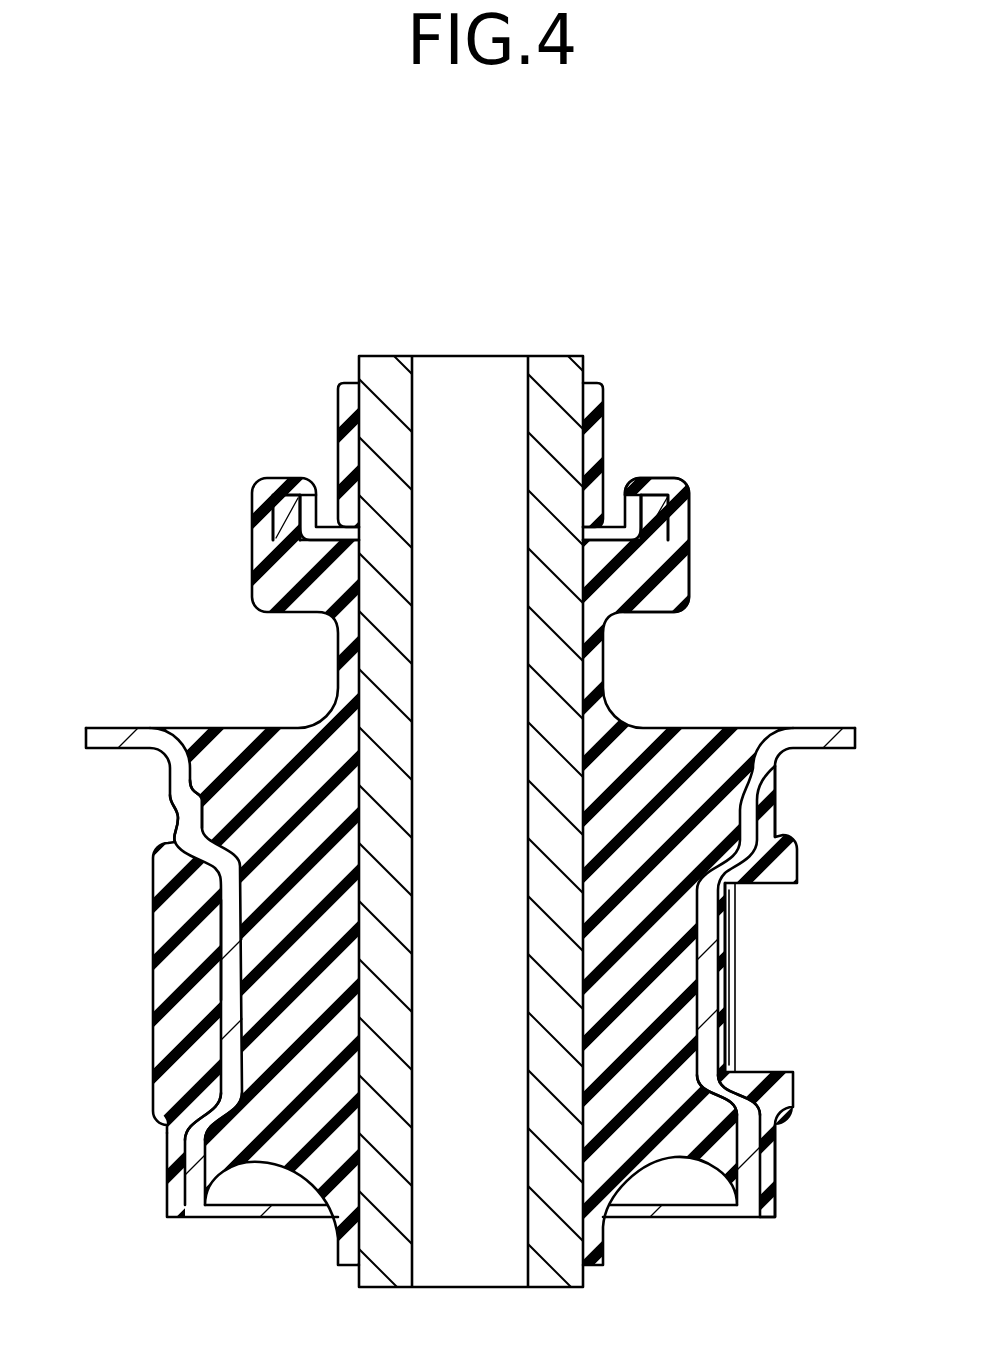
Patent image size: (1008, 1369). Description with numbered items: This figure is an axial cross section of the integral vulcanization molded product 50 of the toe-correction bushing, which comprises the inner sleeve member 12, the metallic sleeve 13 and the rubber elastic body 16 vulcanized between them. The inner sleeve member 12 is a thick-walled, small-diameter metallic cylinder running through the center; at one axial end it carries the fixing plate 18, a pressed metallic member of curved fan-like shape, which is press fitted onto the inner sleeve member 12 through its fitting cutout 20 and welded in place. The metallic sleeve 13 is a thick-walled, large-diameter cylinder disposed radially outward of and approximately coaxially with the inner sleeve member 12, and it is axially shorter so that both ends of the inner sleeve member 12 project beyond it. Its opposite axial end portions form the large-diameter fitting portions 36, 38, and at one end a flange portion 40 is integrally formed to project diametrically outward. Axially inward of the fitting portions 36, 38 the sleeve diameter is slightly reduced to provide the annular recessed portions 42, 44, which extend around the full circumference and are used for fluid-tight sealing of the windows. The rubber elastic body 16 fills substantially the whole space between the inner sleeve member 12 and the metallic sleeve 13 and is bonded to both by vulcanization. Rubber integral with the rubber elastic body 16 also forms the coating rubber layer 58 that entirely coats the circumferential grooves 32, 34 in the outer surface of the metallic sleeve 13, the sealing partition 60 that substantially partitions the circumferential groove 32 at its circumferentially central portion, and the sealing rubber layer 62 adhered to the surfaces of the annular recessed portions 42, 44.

The inner sleeve member 12 is at (380, 373).
The metallic sleeve 13 is at (750, 815).
The rubber elastic body 16 is at (697, 740).
The fixing plate 18 is at (660, 513).
The fitting cutout 20 is at (590, 538).
The circumferential groove 32 is at (222, 942).
The circumferential groove 34 is at (730, 995).
The fitting portion 36 is at (763, 1195).
The fitting portion 38 is at (763, 772).
The flange portion 40 is at (115, 737).
The annular recessed portion 42 is at (188, 1143).
The annular recessed portion 44 is at (190, 832).
The integral vulcanization molded product 50 is at (708, 302).
The coating rubber layer 58 is at (723, 943).
The sealing partition 60 is at (165, 927).
The sealing rubber layer 62 is at (767, 1135).